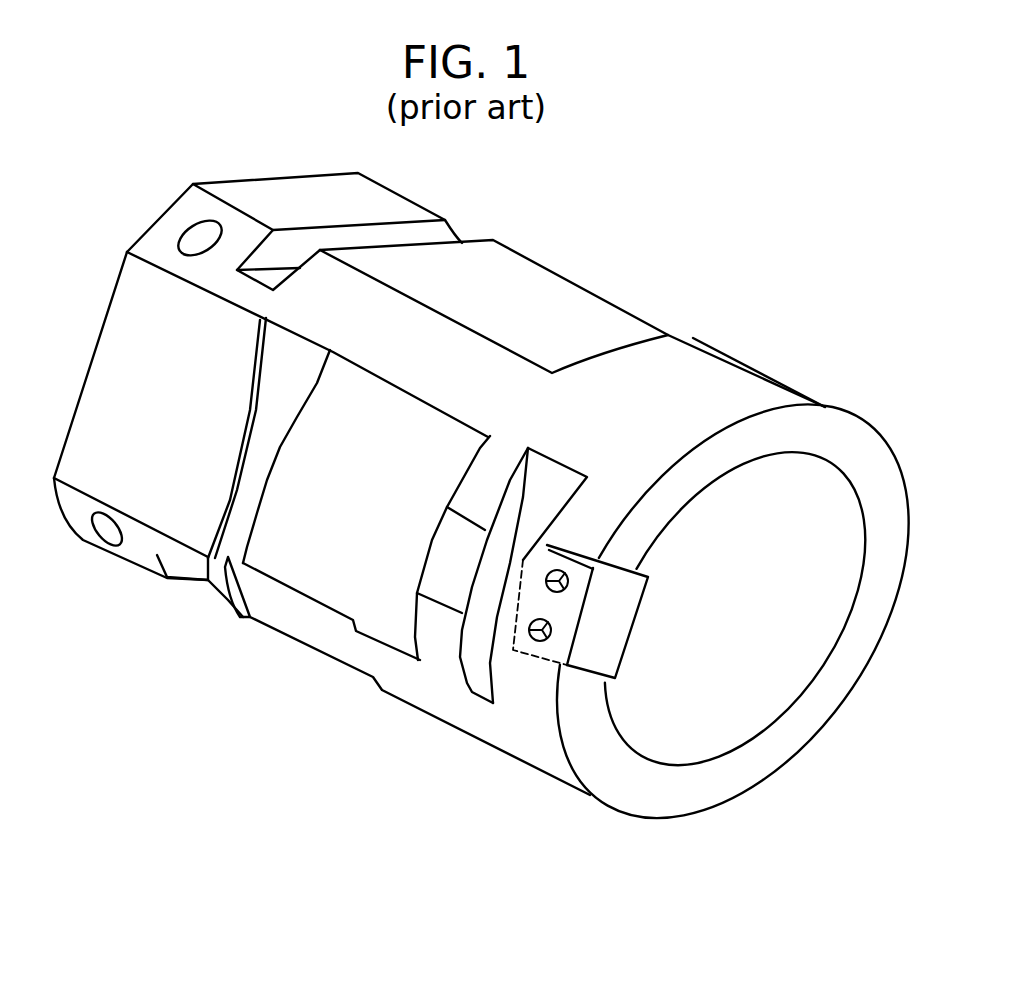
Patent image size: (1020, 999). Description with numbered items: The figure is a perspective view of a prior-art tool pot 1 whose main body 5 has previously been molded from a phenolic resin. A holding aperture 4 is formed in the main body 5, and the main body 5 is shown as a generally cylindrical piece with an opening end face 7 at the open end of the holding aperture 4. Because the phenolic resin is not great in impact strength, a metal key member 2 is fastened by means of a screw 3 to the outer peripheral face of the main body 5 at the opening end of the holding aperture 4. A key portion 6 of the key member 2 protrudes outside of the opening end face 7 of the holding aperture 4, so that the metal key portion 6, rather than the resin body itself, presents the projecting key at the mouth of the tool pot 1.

The tool pot 1 is at (481, 495).
The key member 2 is at (540, 660).
The screw 3 is at (531, 662).
The holding aperture 4 is at (773, 697).
The main body 5 is at (318, 562).
The key portion 6 is at (597, 658).
The opening end face 7 is at (719, 790).